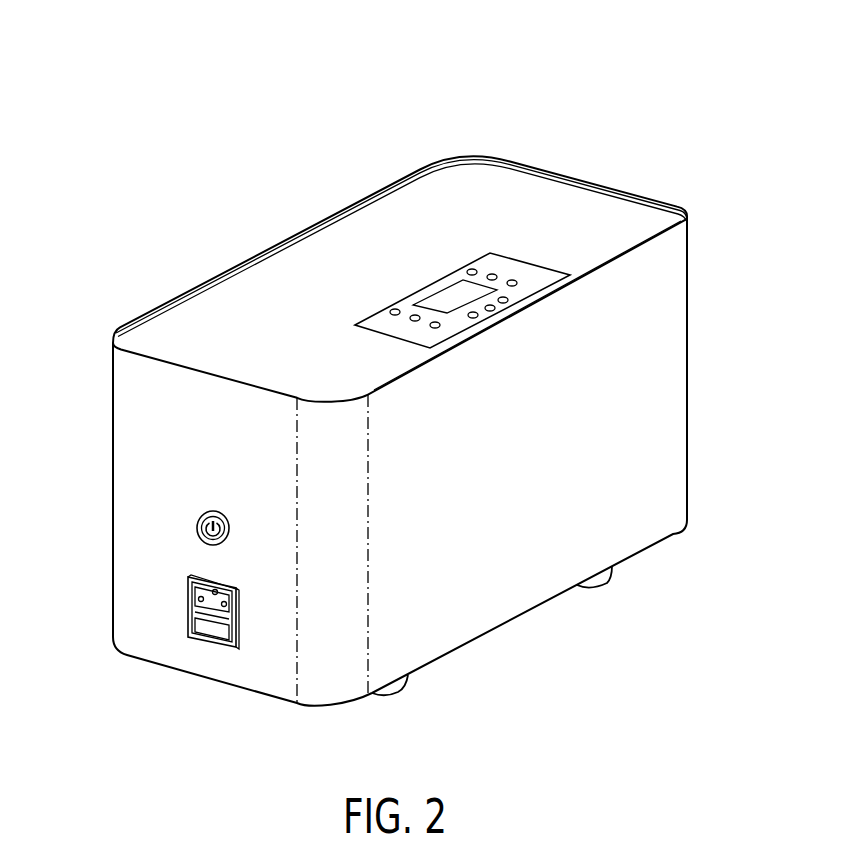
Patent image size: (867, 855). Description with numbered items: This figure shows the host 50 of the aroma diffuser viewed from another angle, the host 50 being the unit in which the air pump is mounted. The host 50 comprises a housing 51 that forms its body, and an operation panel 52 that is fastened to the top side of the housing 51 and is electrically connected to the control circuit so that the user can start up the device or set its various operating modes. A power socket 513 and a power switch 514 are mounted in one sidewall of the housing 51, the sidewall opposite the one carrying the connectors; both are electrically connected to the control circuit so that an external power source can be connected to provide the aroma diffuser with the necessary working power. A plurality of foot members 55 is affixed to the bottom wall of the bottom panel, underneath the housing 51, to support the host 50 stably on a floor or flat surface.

The host 50 is at (203, 277).
The housing 51 is at (687, 418).
The operation panel 52 is at (462, 298).
The power socket 513 is at (205, 627).
The power switch 514 is at (207, 511).
The foot members 55 is at (610, 583).